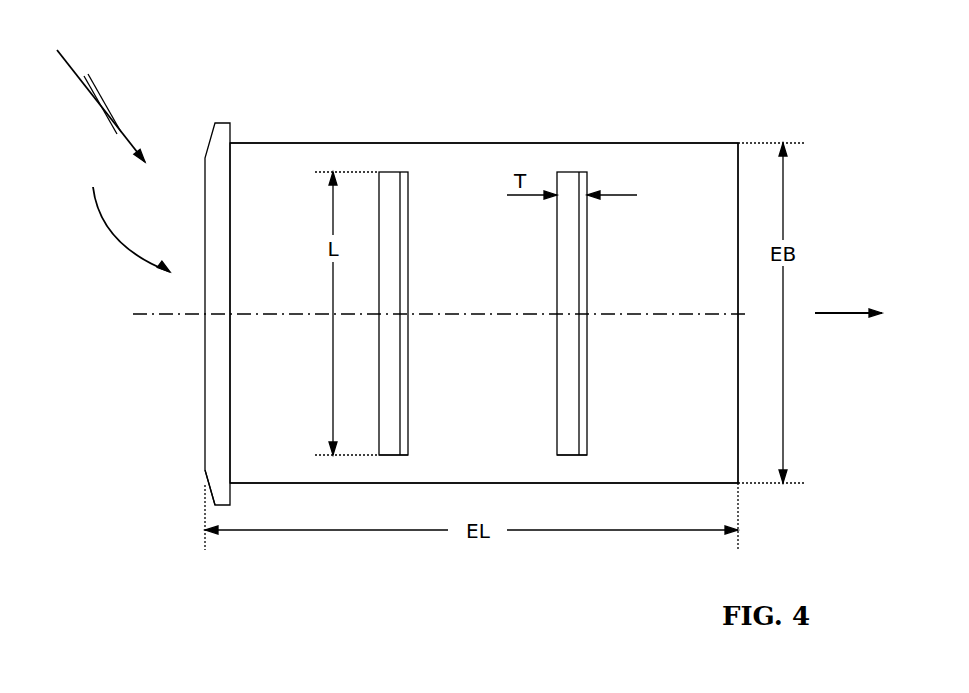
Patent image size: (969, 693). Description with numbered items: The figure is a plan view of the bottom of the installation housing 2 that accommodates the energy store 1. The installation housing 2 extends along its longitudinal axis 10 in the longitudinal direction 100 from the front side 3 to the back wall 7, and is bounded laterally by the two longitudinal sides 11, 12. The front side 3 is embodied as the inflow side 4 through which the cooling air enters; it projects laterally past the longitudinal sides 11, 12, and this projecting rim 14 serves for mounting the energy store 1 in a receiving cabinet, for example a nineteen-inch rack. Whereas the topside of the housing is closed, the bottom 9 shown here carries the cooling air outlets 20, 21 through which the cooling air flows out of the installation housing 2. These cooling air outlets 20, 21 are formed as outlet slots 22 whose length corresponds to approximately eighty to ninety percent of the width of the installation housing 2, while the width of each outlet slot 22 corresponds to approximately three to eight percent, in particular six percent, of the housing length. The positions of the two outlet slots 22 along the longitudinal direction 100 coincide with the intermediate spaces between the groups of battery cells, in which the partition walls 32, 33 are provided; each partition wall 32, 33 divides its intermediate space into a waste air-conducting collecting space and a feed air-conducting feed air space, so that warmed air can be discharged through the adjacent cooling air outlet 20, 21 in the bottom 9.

The energy store 1 is at (92, 94).
The installation housing 2 is at (678, 155).
The front side 3 is at (205, 423).
The inflow side 4 is at (127, 216).
The back wall 7 is at (740, 193).
The bottom 9 is at (294, 213).
The longitudinal axis 10 is at (140, 314).
The longitudinal side 11 is at (477, 143).
The longitudinal side 12 is at (592, 483).
The projecting rim 14 is at (222, 493).
The cooling air outlet 20 is at (398, 195).
The cooling air outlet 21 is at (575, 195).
The outlet slot 22 is at (390, 445).
The partition wall 32 is at (392, 220).
The partition wall 33 is at (570, 220).
The longitudinal direction 100 is at (833, 313).